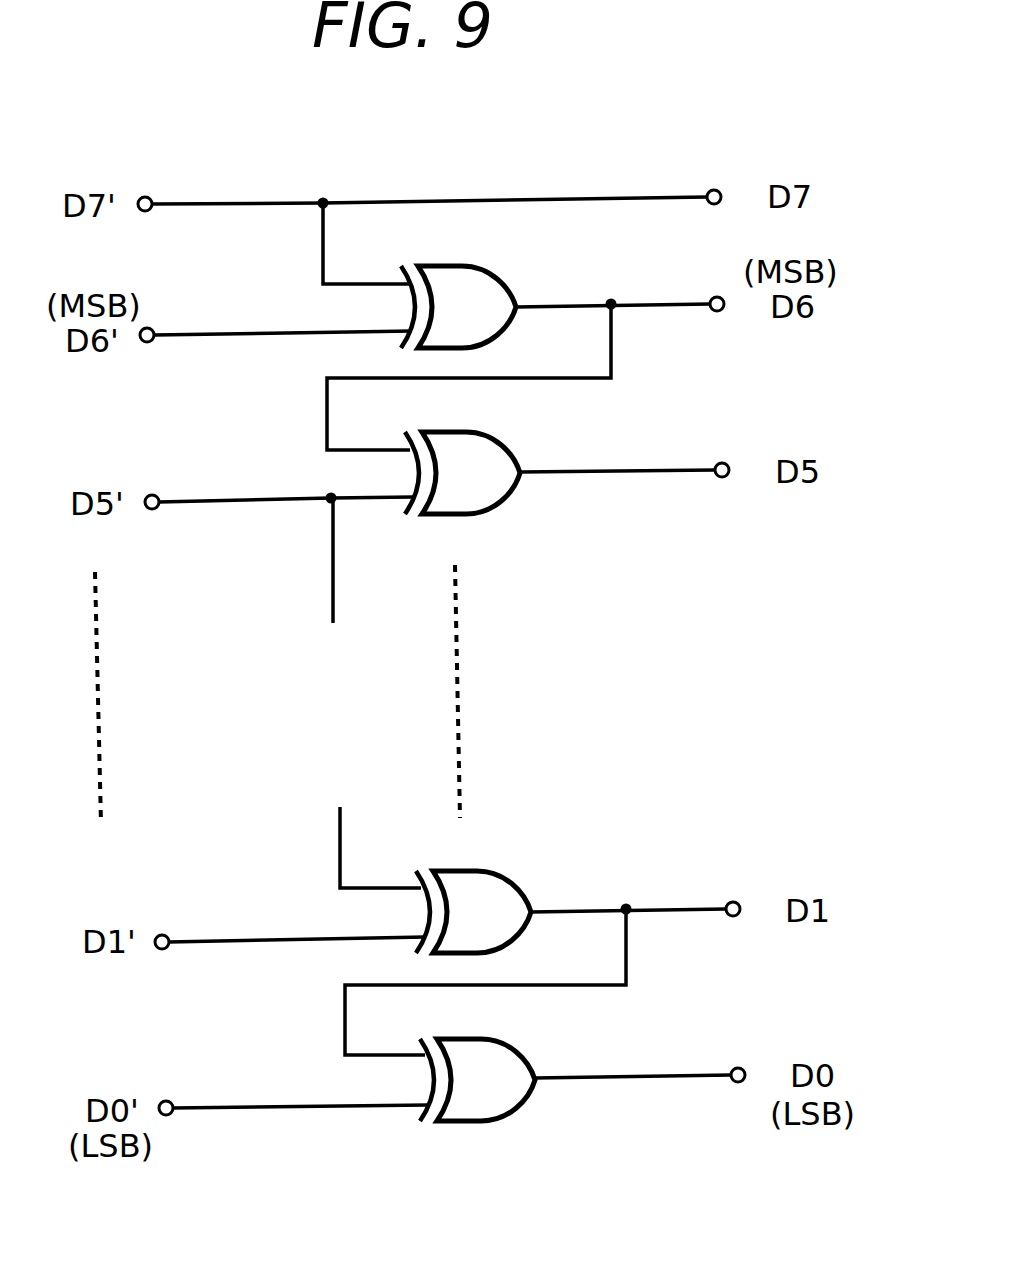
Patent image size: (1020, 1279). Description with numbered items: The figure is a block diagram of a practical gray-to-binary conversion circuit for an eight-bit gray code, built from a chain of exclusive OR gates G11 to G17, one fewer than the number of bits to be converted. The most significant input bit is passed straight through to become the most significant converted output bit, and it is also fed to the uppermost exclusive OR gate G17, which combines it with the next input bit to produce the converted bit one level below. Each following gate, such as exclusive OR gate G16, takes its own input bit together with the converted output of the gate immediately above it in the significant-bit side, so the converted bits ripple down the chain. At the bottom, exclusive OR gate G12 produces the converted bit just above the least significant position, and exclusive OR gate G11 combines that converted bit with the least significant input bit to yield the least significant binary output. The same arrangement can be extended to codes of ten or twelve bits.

The exclusive OR gate G17 is at (484, 268).
The exclusive OR gate G16 is at (484, 433).
The exclusive OR gate G12 is at (494, 872).
The exclusive OR gate G11 is at (500, 1040).